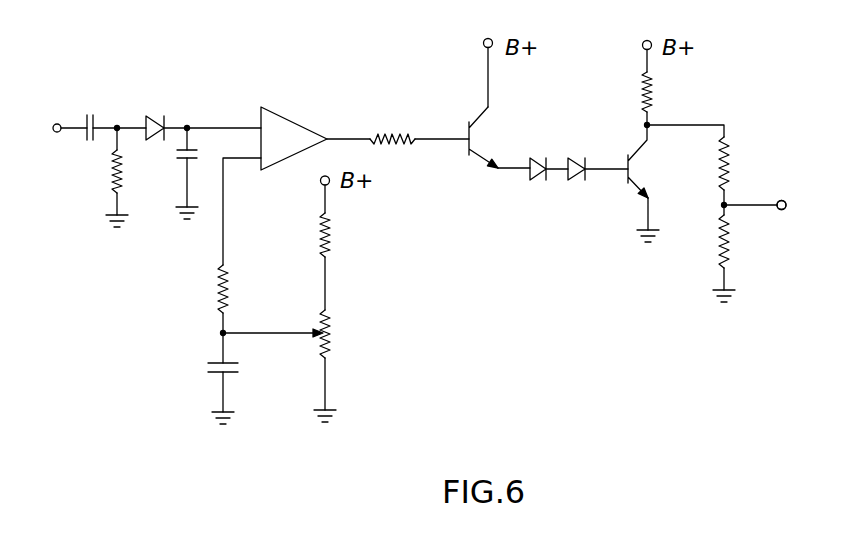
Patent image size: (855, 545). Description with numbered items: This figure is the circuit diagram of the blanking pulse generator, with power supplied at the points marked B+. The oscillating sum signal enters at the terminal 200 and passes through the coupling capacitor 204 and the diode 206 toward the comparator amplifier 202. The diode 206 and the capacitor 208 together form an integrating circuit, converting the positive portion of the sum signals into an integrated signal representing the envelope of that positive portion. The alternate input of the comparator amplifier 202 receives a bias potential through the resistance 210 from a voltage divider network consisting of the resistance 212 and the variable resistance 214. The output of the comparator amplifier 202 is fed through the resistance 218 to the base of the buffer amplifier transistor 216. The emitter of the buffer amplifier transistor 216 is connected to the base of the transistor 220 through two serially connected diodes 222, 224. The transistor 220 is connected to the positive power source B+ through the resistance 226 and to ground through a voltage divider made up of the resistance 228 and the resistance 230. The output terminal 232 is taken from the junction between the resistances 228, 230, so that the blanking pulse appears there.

The terminal 200 is at (56, 123).
The comparator amplifier 202 is at (275, 114).
The coupling capacitor 204 is at (101, 142).
The diode 206 is at (160, 116).
The capacitor 208 is at (176, 160).
The resistance 210 is at (220, 284).
The resistance 212 is at (332, 248).
The variable resistance 214 is at (333, 345).
The buffer amplifier transistor 216 is at (466, 146).
The resistance 218 is at (391, 130).
The transistor 220 is at (626, 160).
The diode 222 is at (534, 159).
The diode 224 is at (569, 185).
The resistance 226 is at (655, 88).
The resistance 228 is at (730, 168).
The resistance 230 is at (728, 255).
The output terminal 232 is at (787, 205).